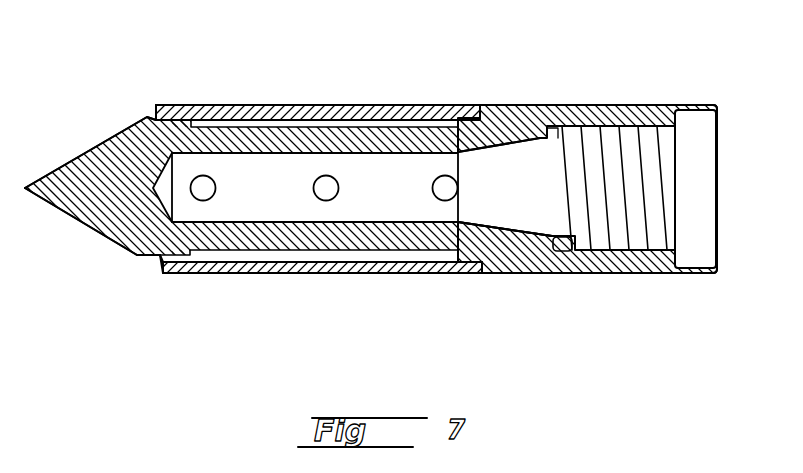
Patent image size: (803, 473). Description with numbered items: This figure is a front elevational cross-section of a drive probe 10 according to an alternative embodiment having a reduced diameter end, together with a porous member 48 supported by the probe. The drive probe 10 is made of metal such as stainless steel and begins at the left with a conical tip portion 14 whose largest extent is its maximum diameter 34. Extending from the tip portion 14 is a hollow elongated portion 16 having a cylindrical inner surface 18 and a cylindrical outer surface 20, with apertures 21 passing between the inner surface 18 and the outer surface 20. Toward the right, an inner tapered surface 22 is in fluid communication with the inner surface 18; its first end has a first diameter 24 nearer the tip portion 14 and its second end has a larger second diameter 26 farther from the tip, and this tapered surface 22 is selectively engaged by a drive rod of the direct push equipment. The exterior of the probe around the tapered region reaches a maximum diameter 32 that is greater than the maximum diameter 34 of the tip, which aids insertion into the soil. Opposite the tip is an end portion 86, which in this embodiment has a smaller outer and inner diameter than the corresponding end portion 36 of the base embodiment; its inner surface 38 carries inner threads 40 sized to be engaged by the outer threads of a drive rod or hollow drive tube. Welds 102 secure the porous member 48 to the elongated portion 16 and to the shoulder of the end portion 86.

The drive probe 10 is at (592, 91).
The tip portion 14 is at (100, 144).
The hollow elongated portion 16 is at (292, 118).
The inner surface 18 is at (415, 165).
The outer surface 20 is at (347, 250).
The apertures 21 is at (313, 187).
The inner tapered surface 22 is at (499, 150).
The first diameter 24 is at (453, 222).
The second diameter 26 is at (570, 253).
The maximum diameter of frustroconical surface 32 is at (538, 273).
The maximum diameter of conical tip portion 34 is at (135, 258).
The end portion 36 is at (546, 118).
The inner surface of end portion 38 is at (700, 268).
The inner threads 40 is at (640, 130).
The porous member 48 is at (355, 105).
The end portion 86 is at (690, 288).
The welds 102 is at (148, 112).